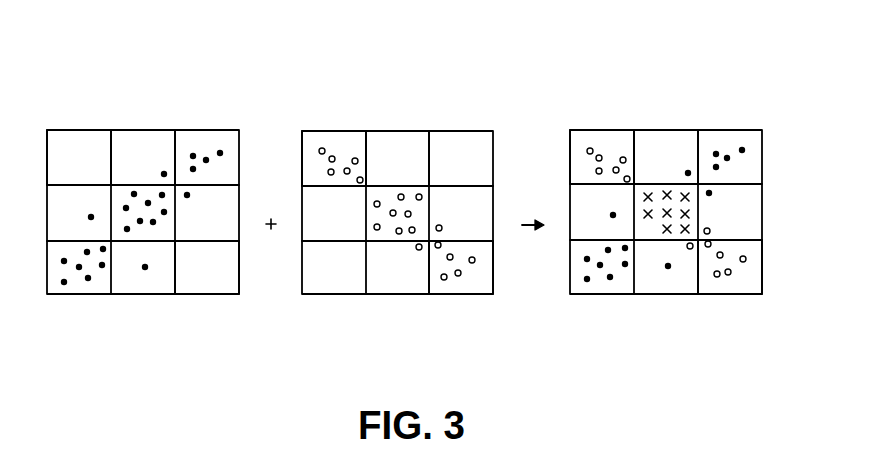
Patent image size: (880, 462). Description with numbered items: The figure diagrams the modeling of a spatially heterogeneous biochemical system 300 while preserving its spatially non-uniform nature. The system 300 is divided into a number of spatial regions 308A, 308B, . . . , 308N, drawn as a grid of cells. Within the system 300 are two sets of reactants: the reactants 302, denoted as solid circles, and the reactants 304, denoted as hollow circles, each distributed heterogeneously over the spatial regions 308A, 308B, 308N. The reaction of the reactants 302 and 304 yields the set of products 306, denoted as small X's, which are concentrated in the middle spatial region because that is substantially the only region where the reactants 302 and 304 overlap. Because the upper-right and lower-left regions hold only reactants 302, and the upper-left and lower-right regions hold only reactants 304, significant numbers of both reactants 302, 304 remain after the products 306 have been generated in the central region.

The biochemical system 300 is at (493, 73).
The reactants 302 is at (143, 294).
The reactants 304 is at (402, 294).
The products 306 is at (663, 294).
The spatial region 308A is at (78, 140).
The spatial region 308B is at (149, 140).
The spatial region 308N is at (208, 283).